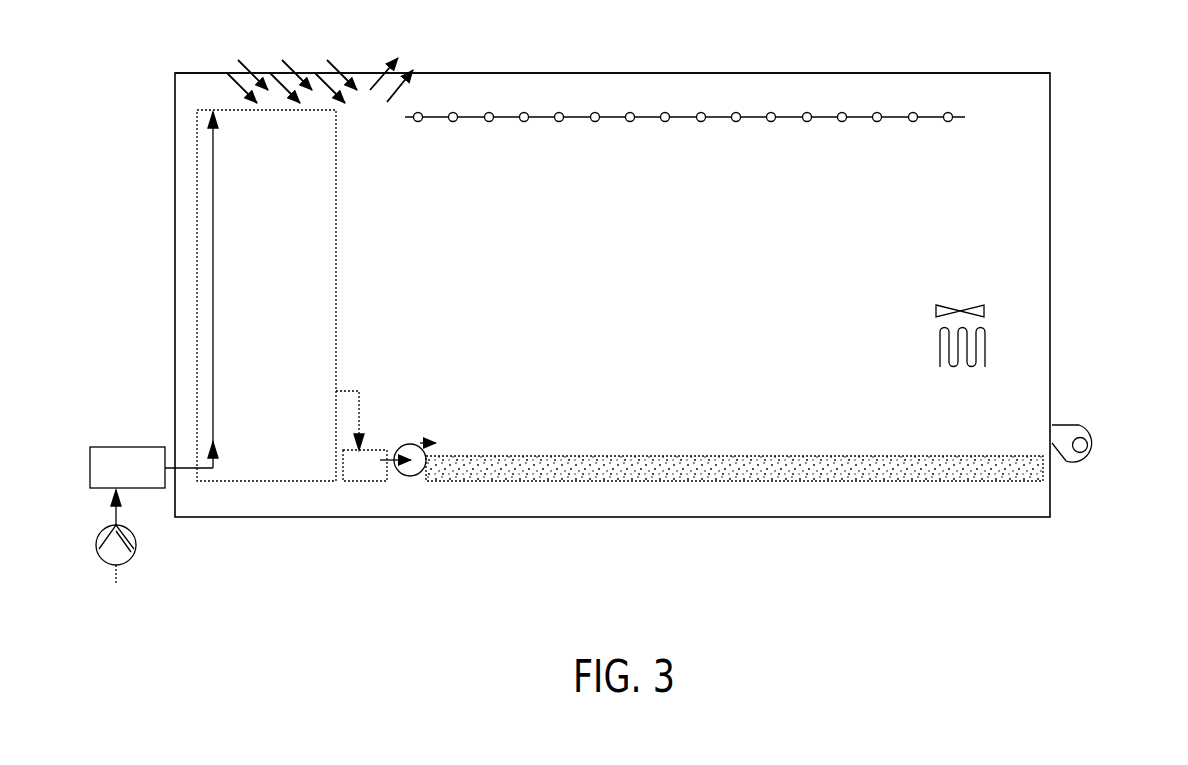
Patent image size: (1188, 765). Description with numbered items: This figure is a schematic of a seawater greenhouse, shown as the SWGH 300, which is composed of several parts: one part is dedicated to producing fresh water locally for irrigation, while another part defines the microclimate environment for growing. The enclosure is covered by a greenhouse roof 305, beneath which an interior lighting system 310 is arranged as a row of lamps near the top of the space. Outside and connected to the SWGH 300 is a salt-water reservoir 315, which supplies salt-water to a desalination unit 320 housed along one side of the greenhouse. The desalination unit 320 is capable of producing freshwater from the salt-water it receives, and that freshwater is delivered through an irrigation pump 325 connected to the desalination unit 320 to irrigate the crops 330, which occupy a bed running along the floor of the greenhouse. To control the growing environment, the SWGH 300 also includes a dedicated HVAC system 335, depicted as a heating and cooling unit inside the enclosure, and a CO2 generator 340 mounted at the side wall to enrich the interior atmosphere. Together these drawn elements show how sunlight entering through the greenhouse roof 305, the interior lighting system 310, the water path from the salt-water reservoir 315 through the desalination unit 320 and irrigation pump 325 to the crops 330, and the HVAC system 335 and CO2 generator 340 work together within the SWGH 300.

The SWGH 300 is at (1050, 213).
The greenhouse roof 305 is at (678, 72).
The interior lighting system 310 is at (768, 114).
The salt-water reservoir 315 is at (124, 447).
The desalination unit 320 is at (213, 278).
The irrigation pump 325 is at (412, 480).
The crops 330 is at (722, 482).
The HVAC system 335 is at (938, 350).
The CO2 generator 340 is at (1100, 440).